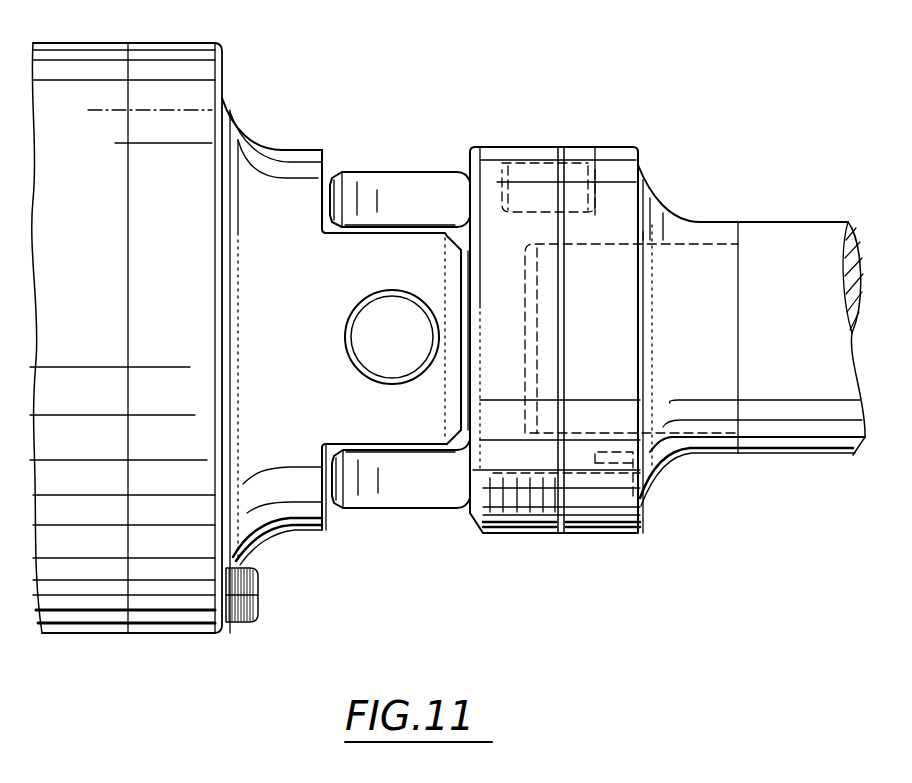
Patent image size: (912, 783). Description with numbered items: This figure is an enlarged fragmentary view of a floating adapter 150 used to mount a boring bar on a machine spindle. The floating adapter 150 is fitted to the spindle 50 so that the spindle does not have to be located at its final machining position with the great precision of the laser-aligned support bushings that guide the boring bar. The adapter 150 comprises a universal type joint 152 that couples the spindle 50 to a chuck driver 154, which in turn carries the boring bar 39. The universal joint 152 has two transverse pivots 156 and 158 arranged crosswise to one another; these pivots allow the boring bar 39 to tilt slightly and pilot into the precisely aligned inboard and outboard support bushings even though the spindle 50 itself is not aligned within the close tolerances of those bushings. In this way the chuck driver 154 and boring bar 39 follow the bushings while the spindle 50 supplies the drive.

The boring bar 39 is at (783, 228).
The spindle 50 is at (92, 627).
The floating adapter 150 is at (253, 91).
The universal type joint 152 is at (380, 171).
The chuck driver 154 is at (672, 212).
The transverse pivot 156 is at (377, 443).
The transverse pivot 158 is at (378, 315).